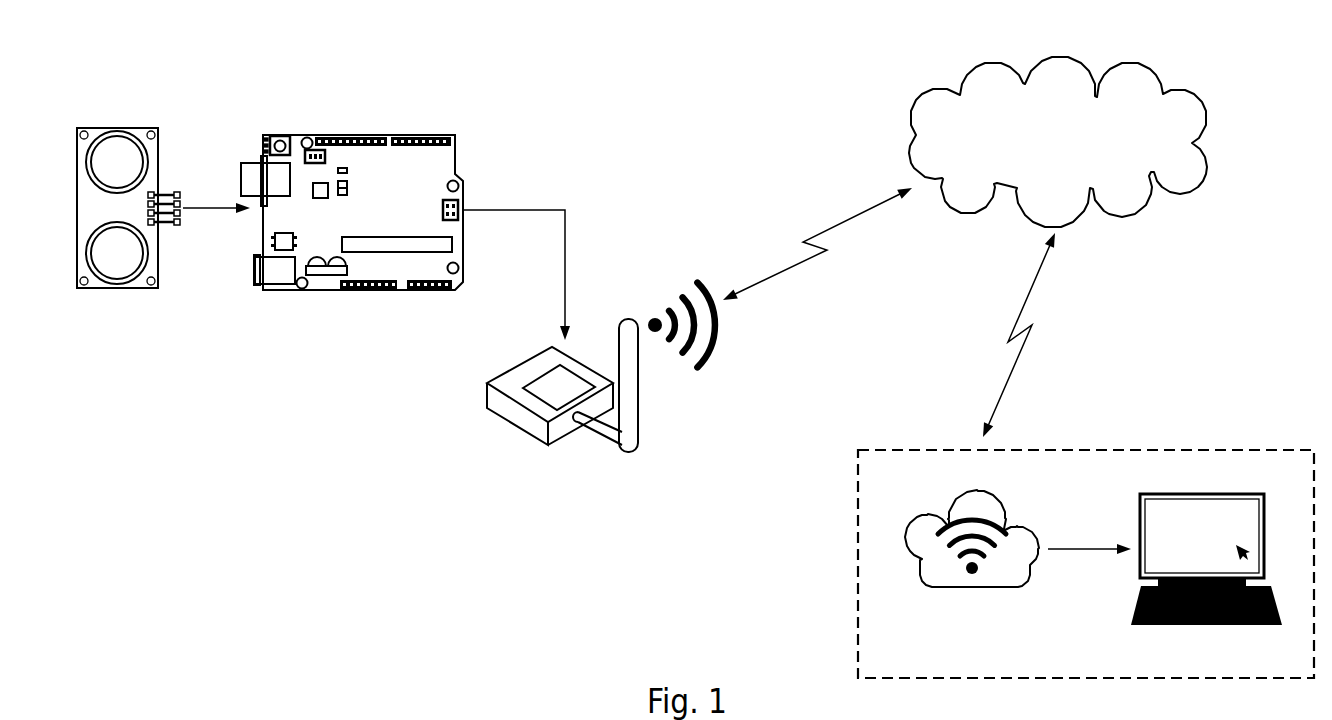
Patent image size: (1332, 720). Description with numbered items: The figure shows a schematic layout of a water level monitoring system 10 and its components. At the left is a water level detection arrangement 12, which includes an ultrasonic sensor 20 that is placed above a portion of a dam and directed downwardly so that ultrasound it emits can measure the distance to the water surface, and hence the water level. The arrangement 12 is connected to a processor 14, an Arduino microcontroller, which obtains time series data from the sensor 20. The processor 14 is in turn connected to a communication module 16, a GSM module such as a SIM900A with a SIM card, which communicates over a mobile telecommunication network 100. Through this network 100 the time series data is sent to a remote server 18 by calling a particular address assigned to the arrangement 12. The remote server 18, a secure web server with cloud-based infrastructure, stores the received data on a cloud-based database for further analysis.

The system 10 is at (247, 522).
The water level detection arrangement 12 is at (135, 106).
The processor 14 is at (365, 292).
The communication module 16 is at (540, 443).
The remote server 18 is at (1170, 448).
The ultrasonic sensor 20 is at (117, 290).
The mobile telecommunication network 100 is at (1110, 220).